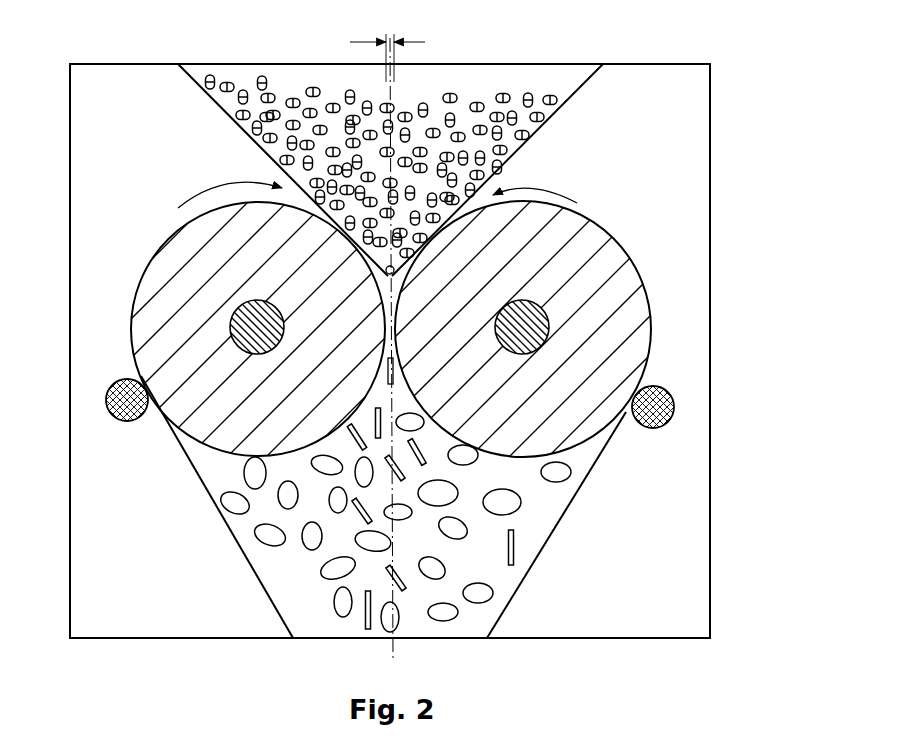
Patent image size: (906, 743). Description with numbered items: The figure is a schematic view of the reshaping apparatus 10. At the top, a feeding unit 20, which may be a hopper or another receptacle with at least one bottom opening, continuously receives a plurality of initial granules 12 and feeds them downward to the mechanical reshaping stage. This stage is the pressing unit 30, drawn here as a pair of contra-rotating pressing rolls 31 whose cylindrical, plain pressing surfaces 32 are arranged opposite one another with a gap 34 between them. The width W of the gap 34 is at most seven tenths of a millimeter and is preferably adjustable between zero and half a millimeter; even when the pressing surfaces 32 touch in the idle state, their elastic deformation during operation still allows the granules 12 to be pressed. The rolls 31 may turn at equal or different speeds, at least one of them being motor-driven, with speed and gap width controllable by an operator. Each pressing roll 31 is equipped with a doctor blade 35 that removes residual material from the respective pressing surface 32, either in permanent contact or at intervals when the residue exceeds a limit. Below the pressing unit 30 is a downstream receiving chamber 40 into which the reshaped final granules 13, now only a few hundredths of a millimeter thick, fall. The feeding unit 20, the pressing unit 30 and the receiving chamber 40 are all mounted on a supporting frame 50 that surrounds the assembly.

The reshaping apparatus 10 is at (753, 50).
The initial granules 12 is at (503, 95).
The reshaped final granules 13 is at (335, 567).
The feeding unit 20 is at (587, 92).
The pressing unit 30 is at (427, 330).
The pressing rolls 31 is at (131, 315).
The pressing surfaces 32 is at (146, 262).
The gap 34 is at (379, 262).
The doctor blade 35 is at (105, 400).
The receiving chamber 40 is at (567, 503).
The supporting frame 50 is at (710, 598).